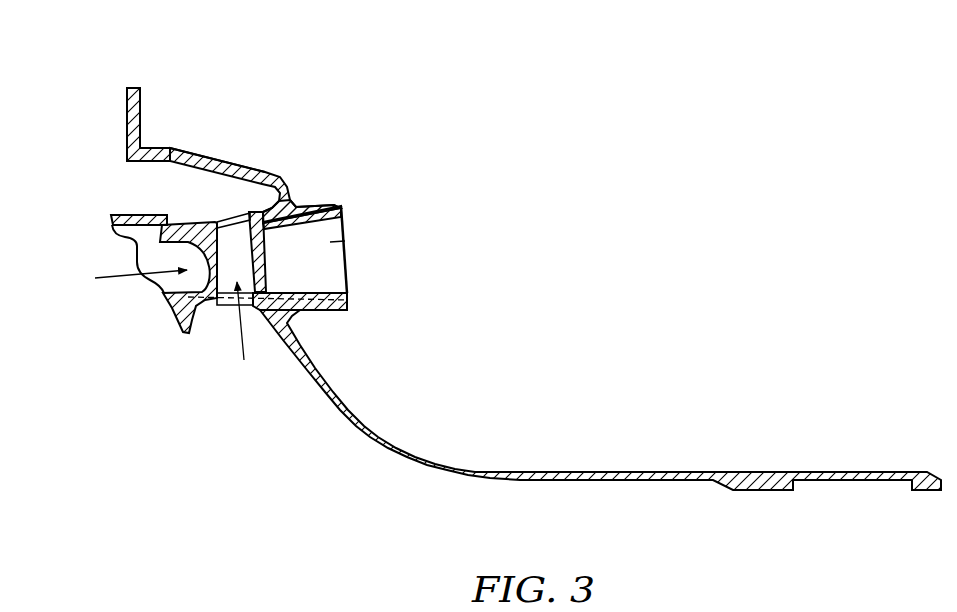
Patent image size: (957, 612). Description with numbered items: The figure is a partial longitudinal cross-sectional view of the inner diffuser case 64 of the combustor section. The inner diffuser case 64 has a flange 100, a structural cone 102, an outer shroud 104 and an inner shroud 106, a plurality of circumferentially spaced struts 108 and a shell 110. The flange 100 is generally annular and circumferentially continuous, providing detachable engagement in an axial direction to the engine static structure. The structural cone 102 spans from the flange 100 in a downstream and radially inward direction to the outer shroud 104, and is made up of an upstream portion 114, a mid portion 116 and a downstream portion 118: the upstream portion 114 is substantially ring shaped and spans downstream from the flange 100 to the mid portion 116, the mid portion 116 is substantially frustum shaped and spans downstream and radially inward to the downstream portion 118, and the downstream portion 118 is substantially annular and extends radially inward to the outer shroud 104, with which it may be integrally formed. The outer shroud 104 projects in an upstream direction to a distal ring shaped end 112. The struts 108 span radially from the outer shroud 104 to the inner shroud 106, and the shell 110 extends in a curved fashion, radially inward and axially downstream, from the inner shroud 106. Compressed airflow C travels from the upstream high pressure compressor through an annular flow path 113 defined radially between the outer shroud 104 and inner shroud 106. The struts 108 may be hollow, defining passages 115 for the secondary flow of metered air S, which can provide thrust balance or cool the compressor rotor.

The inner diffuser case 64 is at (618, 167).
The flange 100 is at (126, 98).
The structural cone 102 is at (238, 156).
The outer shroud 104 is at (322, 207).
The inner shroud 106 is at (350, 293).
The strut 108 is at (347, 255).
The shell 110 is at (372, 432).
The distal ring shaped end 112 is at (113, 218).
The annular flow path 113 is at (330, 242).
The upstream portion 114 is at (153, 148).
The passage 115 is at (248, 288).
The mid portion 116 is at (195, 157).
The downstream portion 118 is at (288, 192).
The compressed airflow C is at (123, 277).
The secondary flow of metered air S is at (243, 346).